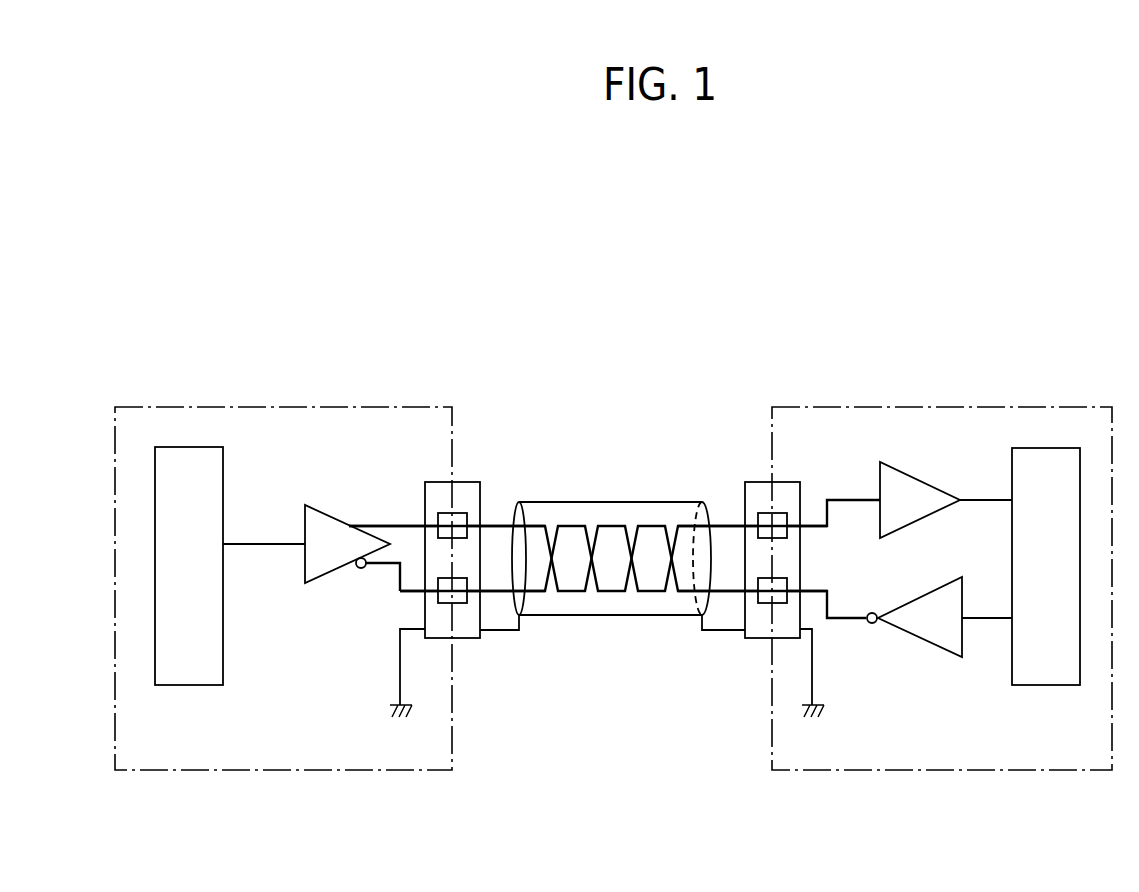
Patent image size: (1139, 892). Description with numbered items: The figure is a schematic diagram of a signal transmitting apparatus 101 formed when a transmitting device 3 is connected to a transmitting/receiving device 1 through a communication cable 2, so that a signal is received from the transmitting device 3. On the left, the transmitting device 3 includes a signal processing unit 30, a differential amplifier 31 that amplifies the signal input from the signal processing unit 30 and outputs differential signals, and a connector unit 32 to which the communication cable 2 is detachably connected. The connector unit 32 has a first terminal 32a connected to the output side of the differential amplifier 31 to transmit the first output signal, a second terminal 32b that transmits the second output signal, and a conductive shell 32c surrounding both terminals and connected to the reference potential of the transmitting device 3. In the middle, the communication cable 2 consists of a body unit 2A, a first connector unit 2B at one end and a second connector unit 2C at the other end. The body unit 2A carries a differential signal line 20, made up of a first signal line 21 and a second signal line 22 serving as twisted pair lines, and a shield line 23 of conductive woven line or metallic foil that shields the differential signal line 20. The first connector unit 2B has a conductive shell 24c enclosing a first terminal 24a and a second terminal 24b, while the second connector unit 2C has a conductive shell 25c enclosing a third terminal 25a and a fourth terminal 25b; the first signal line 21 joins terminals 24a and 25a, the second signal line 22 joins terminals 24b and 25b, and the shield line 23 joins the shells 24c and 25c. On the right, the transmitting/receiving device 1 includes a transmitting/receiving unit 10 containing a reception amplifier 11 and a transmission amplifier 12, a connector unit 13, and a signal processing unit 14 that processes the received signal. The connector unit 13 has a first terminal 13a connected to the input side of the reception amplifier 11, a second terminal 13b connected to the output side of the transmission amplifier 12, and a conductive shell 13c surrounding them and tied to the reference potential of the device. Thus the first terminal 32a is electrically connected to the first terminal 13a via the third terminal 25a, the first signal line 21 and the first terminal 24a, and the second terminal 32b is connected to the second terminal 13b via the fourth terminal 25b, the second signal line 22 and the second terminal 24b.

The signal transmitting apparatus 101 is at (945, 229).
The transmitting/receiving device 1 is at (1057, 408).
The communication cable 2 is at (514, 321).
The body unit 2A is at (657, 386).
The first connector unit 2B is at (744, 451).
The second connector unit 2C is at (470, 456).
The transmitting device 3 is at (188, 407).
The transmitting/receiving unit 10 is at (902, 432).
The reception amplifier 11 is at (918, 486).
The transmission amplifier 12 is at (946, 590).
The connector unit 13 is at (788, 456).
The first terminal 13a is at (790, 518).
The second terminal 13b is at (790, 584).
The shell 13c is at (792, 510).
The signal processing unit 14 is at (1048, 448).
The differential signal line 20 is at (625, 426).
The first signal line 21 is at (536, 522).
The second signal line 22 is at (574, 522).
The shield line 23 is at (622, 500).
The first terminal 24a is at (758, 520).
The second terminal 24b is at (745, 628).
The shell 24c is at (760, 640).
The third terminal 25a is at (468, 520).
The fourth terminal 25b is at (480, 627).
The shell 25c is at (470, 640).
The signal processing unit 30 is at (188, 447).
The differential amplifier 31 is at (305, 512).
The connector unit 32 is at (434, 451).
The first terminal 32a is at (438, 520).
The second terminal 32b is at (438, 592).
The shell 32c is at (432, 482).